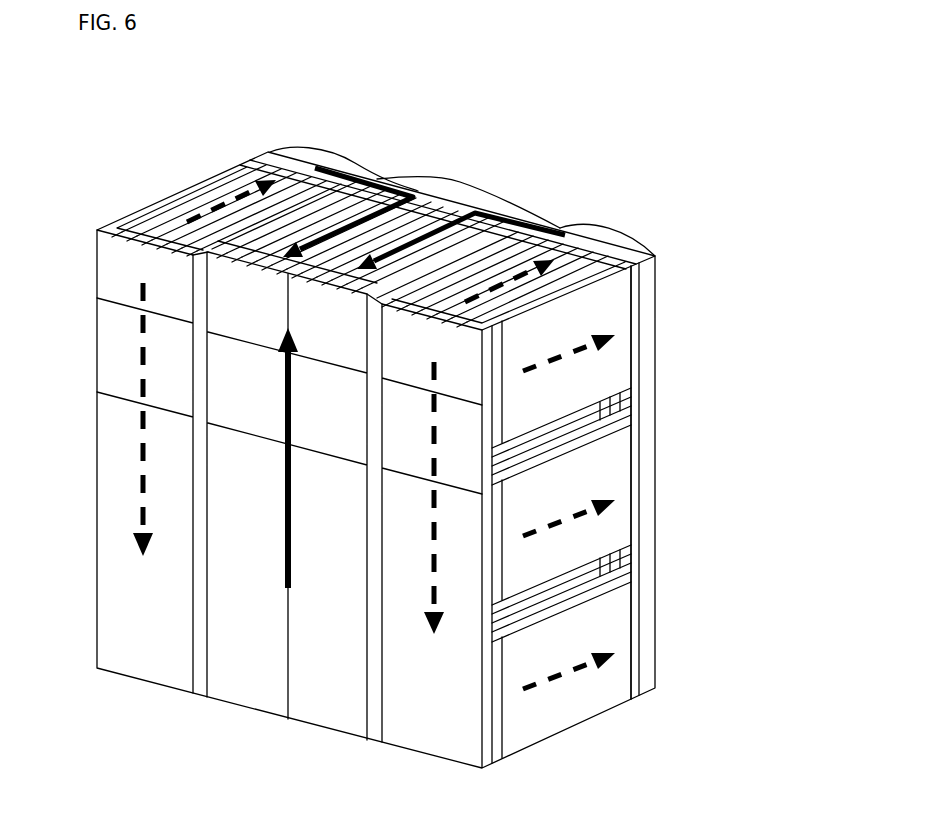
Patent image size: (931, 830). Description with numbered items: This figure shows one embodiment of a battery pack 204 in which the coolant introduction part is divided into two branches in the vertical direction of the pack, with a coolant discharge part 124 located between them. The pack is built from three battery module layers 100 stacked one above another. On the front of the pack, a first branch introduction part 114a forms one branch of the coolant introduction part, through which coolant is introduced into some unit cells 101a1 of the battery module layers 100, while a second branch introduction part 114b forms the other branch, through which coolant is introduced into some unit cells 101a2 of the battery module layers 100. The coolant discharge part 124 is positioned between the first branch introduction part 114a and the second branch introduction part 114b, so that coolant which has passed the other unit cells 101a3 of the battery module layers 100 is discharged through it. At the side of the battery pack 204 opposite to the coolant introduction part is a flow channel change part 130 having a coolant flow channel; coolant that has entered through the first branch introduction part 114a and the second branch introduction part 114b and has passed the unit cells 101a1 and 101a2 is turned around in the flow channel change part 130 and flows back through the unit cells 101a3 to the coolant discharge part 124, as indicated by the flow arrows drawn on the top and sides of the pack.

The battery pack 204 is at (119, 111).
The battery module layers 100 is at (648, 664).
The first branch introduction part 114a is at (420, 723).
The second branch introduction part 114b is at (170, 674).
The coolant discharge part 124 is at (263, 697).
The flow channel change part 130 is at (655, 428).
The unit cells 101a1 is at (617, 225).
The unit cells 101a2 is at (350, 135).
The unit cells 101a3 is at (443, 178).